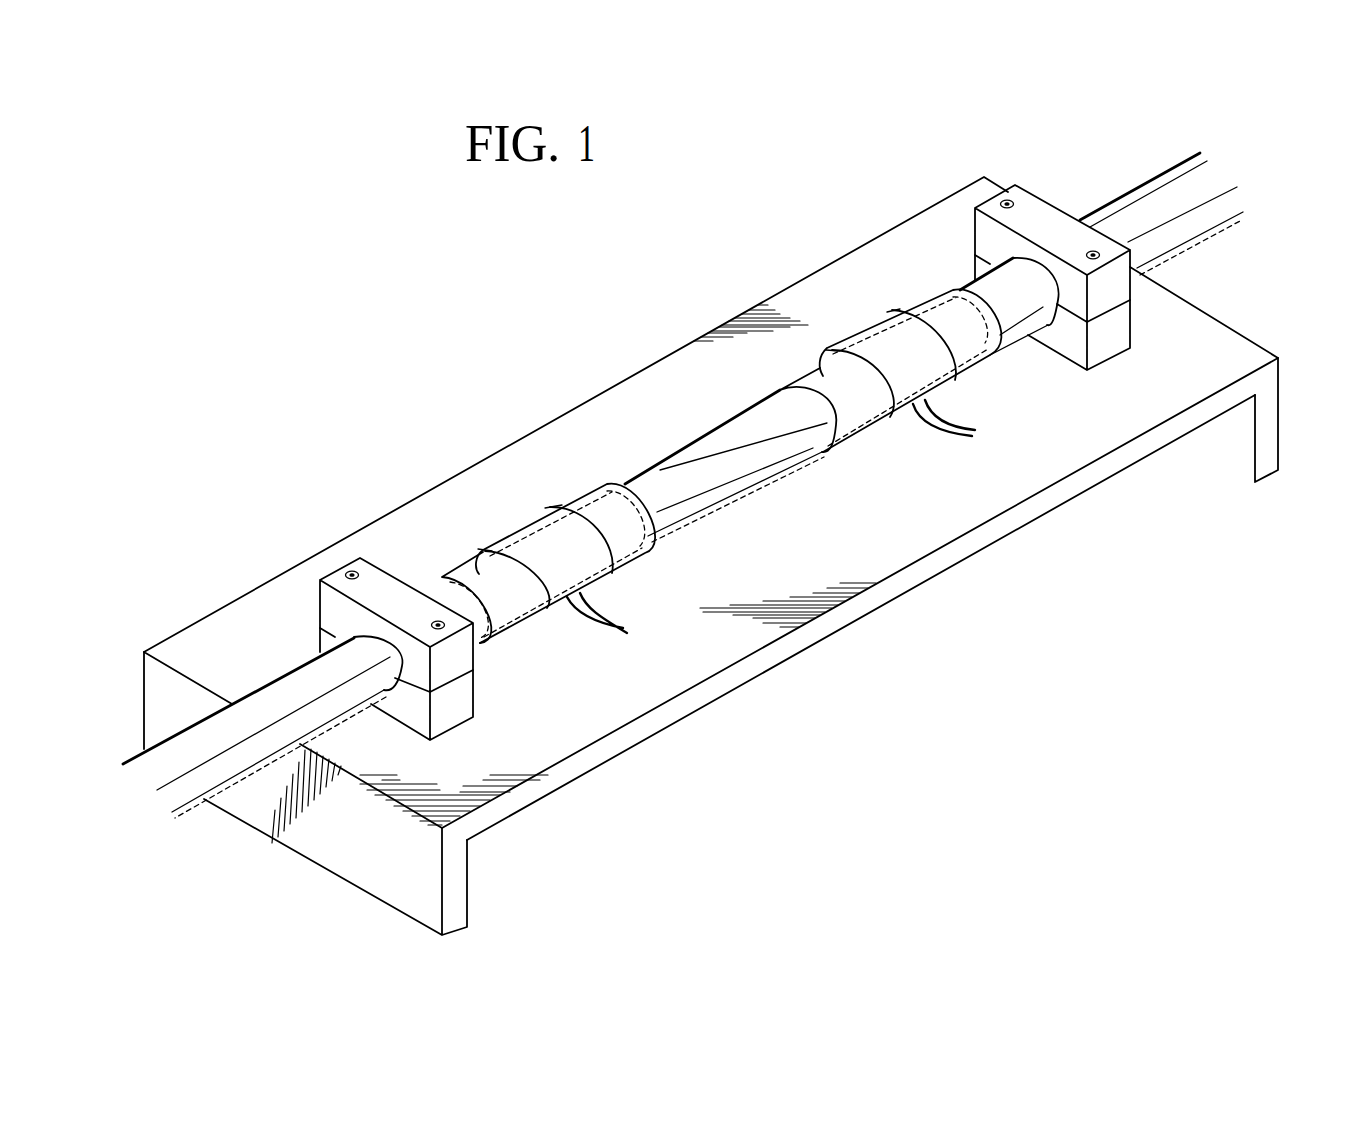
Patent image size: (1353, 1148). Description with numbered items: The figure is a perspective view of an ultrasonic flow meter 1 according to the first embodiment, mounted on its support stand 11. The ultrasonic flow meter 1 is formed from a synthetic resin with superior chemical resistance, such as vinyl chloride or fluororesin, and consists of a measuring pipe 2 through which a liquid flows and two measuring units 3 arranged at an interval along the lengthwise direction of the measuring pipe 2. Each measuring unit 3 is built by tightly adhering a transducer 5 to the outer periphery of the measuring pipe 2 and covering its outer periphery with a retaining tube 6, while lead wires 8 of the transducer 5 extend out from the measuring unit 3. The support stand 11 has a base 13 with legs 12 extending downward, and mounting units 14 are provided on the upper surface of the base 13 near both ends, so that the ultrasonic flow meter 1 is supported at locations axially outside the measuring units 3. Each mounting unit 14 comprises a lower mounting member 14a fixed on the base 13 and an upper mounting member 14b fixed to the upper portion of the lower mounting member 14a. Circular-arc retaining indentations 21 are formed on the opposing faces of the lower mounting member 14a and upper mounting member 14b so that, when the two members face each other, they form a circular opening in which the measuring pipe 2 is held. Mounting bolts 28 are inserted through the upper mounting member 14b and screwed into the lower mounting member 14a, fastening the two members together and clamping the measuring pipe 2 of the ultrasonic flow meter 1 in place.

The ultrasonic flow meter 1 is at (721, 465).
The measuring pipe 2 is at (683, 452).
The measuring unit 3 is at (496, 513).
The transducer 5 is at (552, 522).
The retaining tube 6 is at (490, 645).
The lead wires 8 is at (625, 640).
The support stand 11 is at (711, 522).
The legs 12 is at (456, 887).
The base 13 is at (1043, 510).
The mounting unit 14 is at (756, 466).
The lower mounting member 14a is at (422, 732).
The upper mounting member 14b is at (745, 402).
The retaining indentation 21 is at (319, 648).
The mounting bolts 28 is at (349, 572).